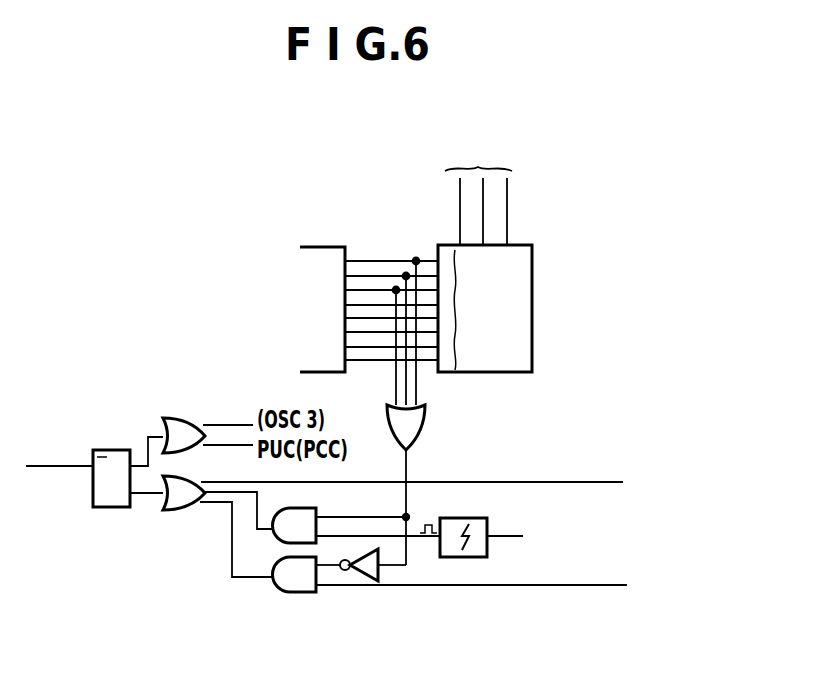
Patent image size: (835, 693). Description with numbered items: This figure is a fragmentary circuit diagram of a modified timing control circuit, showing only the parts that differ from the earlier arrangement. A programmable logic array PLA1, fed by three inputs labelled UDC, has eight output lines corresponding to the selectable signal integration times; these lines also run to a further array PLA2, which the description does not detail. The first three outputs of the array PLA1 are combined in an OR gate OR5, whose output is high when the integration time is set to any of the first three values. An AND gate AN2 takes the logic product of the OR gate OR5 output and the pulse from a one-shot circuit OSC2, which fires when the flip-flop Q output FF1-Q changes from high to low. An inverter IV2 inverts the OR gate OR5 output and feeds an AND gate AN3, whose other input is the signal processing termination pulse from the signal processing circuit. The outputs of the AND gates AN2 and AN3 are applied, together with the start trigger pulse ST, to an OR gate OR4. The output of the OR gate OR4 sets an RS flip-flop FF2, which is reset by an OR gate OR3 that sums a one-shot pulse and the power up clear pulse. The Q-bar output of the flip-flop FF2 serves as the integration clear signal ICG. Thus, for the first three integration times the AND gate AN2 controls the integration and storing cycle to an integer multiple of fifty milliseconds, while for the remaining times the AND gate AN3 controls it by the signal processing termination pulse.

The programmable logic array PLA2 is at (333, 333).
The programmable logic array PLA1 is at (512, 358).
The up/down counter outputs Q1-Q3 UDC is at (482, 201).
The OR gate OR5 is at (425, 427).
The RS flip-flop FF2 is at (110, 507).
The integration clear signal ICG is at (59, 451).
The OR gate OR3 is at (190, 410).
The OR gate OR4 is at (182, 510).
The start trigger pulse ST is at (428, 479).
The AND gate AN2 is at (318, 518).
The one-shot circuit OSC2 is at (461, 518).
The Q output of flip-flop FF1 FF1-Q is at (557, 540).
The AND gate AN3 is at (292, 592).
The inverter IV2 is at (374, 585).